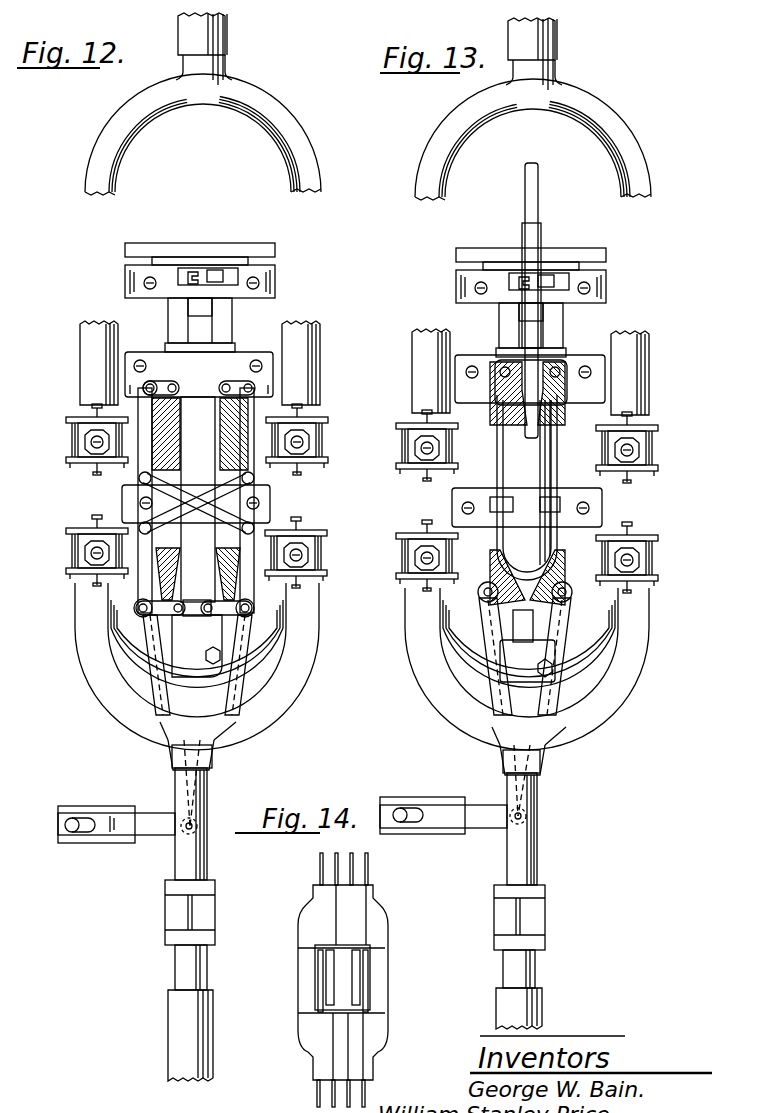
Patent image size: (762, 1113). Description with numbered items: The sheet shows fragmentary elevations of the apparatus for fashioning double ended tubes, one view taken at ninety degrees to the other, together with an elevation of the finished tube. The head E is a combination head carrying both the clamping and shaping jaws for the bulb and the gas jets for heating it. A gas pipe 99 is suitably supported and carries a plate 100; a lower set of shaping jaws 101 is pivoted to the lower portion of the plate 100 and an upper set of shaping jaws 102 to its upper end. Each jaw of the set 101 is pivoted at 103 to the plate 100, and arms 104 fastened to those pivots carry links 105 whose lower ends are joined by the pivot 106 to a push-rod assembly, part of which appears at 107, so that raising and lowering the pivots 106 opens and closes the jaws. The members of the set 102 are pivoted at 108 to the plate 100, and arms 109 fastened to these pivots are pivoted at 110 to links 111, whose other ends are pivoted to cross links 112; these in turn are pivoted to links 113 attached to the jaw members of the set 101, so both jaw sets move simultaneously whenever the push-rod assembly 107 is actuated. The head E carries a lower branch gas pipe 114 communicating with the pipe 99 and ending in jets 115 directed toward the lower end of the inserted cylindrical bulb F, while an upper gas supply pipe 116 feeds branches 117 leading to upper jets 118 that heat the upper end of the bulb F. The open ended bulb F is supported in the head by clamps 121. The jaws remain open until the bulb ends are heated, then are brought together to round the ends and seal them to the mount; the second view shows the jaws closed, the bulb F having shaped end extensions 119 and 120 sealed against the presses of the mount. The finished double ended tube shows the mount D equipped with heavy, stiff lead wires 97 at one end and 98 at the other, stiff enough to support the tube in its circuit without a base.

In FIG. 12, the upper gas supply pipe 116 is at (203, 104).
In FIG. 12, the branches 117 is at (270, 106).
In FIG. 12, the head E is at (287, 298).
In FIG. 12, the pivots of upper jaw set 108 is at (168, 386).
In FIG. 12, the arms 109 is at (157, 381).
In FIG. 12, the pivots of arms to links 110 is at (143, 388).
In FIG. 12, the upper set of shaping jaws 102 is at (227, 422).
In FIG. 13, the upper set of shaping jaws 102 is at (568, 397).
In FIG. 12, the upper jets 118 is at (328, 440).
In FIG. 12, the links 111 is at (124, 488).
In FIG. 12, the cross links 112 is at (183, 517).
In FIG. 12, the plate 100 is at (200, 555).
In FIG. 12, the jets 115 is at (327, 578).
In FIG. 12, the links 113 is at (160, 585).
In FIG. 12, the pivots of lower jaws 103 is at (220, 613).
In FIG. 12, the lower set of shaping jaws 101 is at (140, 603).
In FIG. 13, the lower set of shaping jaws 101 is at (558, 567).
In FIG. 12, the arms 104 is at (150, 635).
In FIG. 12, the links 105 is at (160, 673).
In FIG. 12, the lower branch gas pipe 114 is at (273, 690).
In FIG. 12, the gas pipe 99 is at (195, 863).
In FIG. 12, the push-rod assembly 107 is at (147, 828).
In FIG. 12, the pivot 106 is at (183, 837).
In FIG. 13, the end extension 120 is at (530, 383).
In FIG. 13, the cylindrical bulb F is at (530, 482).
In FIG. 13, the clamps 121 is at (557, 503).
In FIG. 13, the end extension 119 is at (527, 597).
In FIG. 14, the lead wires 97 is at (370, 875).
In FIG. 14, the mount D is at (357, 982).
In FIG. 14, the lead wires 98 is at (367, 1092).